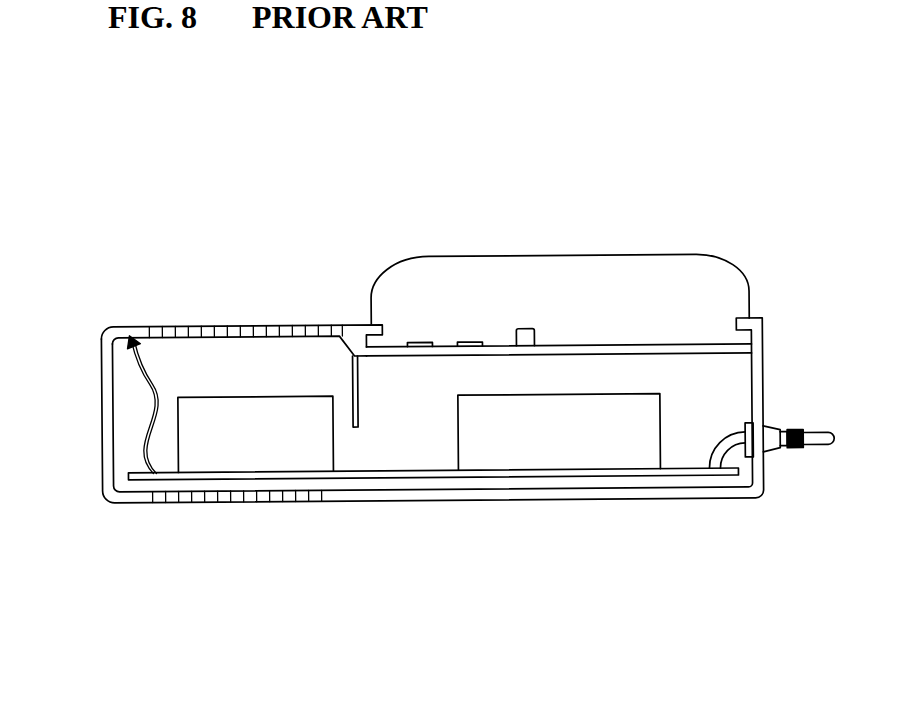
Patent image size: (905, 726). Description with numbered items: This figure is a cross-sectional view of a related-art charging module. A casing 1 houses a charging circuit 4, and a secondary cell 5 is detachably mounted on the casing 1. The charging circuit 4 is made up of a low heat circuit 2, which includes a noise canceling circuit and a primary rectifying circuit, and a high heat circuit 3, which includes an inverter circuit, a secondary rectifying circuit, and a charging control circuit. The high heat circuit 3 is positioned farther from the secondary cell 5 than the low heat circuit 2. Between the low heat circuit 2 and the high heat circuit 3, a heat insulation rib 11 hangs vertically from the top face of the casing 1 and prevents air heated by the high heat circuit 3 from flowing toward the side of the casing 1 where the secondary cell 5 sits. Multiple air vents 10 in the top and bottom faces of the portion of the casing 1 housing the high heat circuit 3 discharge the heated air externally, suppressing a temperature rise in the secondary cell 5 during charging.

The casing 1 is at (758, 348).
The low heat circuit 2 is at (572, 433).
The high heat circuit 3 is at (238, 447).
The charging circuit 4 is at (220, 437).
The secondary cell 5 is at (565, 283).
The air vents 10 is at (260, 323).
The heat insulation rib 11 is at (358, 401).